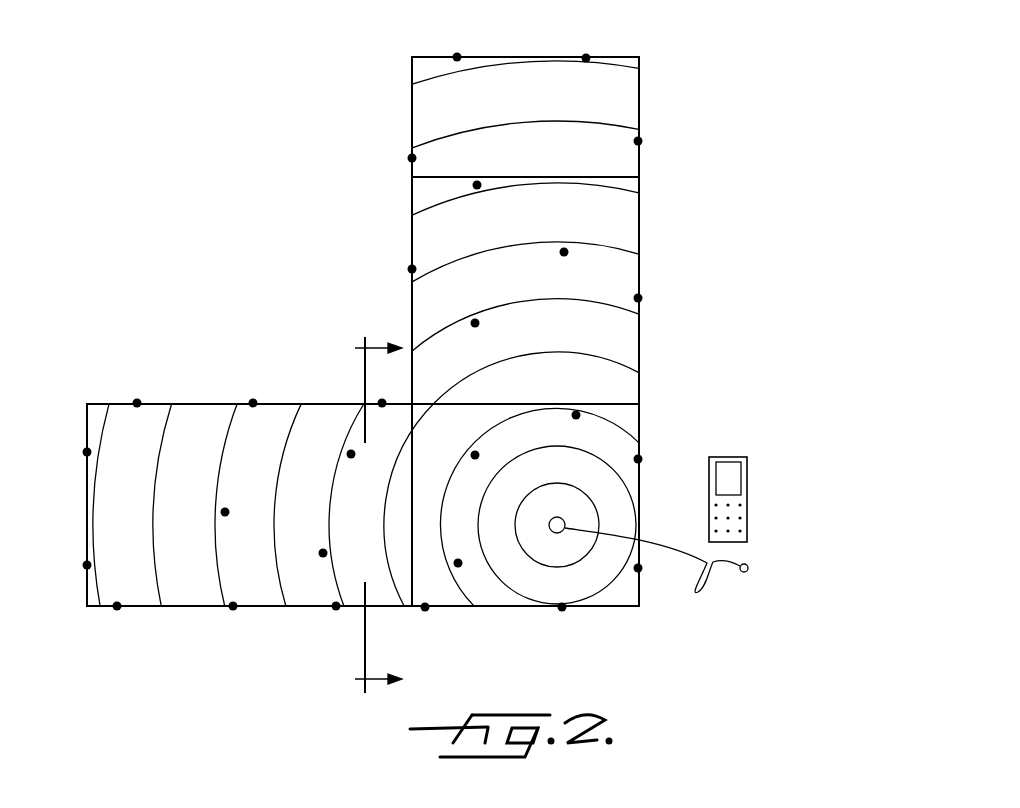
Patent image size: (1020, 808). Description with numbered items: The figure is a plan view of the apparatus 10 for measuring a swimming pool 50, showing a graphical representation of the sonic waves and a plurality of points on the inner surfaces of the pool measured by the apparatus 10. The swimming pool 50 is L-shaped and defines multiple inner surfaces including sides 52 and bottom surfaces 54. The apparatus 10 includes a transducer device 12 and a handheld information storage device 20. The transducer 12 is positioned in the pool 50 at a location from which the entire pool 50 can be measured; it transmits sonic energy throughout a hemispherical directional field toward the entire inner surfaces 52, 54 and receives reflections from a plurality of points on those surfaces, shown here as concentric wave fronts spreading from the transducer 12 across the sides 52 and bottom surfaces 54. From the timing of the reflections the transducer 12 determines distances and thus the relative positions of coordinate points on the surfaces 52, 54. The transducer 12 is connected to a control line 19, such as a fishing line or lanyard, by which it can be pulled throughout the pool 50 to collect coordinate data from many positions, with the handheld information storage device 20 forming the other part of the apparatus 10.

The apparatus 10 is at (692, 494).
The transducer device 12 is at (566, 523).
The control line 19 is at (716, 565).
The handheld information storage device 20 is at (749, 490).
The swimming pool 50 is at (373, 348).
The sides 52 is at (522, 57).
The bottom surfaces 54 is at (613, 104).